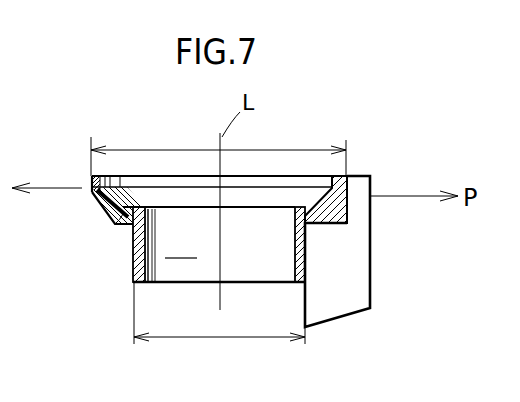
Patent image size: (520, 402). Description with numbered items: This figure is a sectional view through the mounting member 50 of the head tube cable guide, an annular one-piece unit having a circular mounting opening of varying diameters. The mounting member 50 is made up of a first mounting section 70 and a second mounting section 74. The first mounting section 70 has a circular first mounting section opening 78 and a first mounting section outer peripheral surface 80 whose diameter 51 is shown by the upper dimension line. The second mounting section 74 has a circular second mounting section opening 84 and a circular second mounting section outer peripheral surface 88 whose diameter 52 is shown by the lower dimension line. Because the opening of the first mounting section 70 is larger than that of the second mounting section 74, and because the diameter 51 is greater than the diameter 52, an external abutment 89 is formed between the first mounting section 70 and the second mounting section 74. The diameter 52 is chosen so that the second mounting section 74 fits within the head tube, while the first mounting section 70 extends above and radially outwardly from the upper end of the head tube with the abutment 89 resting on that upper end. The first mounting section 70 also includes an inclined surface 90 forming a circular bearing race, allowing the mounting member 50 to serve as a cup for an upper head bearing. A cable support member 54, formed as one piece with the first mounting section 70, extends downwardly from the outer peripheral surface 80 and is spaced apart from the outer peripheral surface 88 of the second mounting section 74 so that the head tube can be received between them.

The mounting member 50 is at (96, 225).
The first mounting section outer peripheral surface diameter 51 is at (133, 150).
The second mounting section outer peripheral surface diameter 52 is at (244, 336).
The cable support member 54 is at (358, 267).
The first mounting section 70 is at (93, 200).
The second mounting section 74 is at (133, 248).
The first mounting section opening 78 is at (148, 182).
The first mounting section outer peripheral surface 80 is at (91, 178).
The second mounting section opening 84 is at (181, 245).
The second mounting section outer peripheral surface 88 is at (133, 275).
The external abutment 89 is at (120, 224).
The inclined surface 90 is at (125, 203).